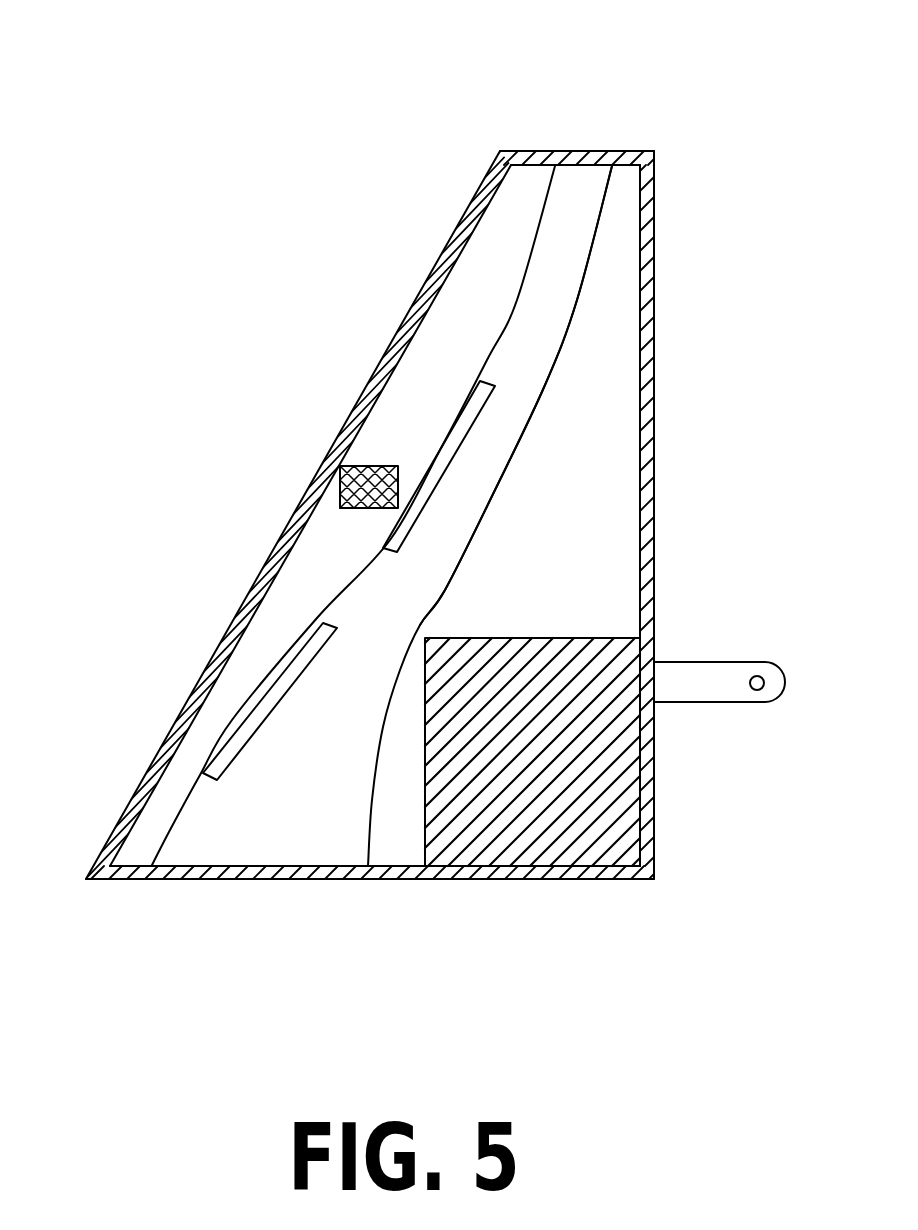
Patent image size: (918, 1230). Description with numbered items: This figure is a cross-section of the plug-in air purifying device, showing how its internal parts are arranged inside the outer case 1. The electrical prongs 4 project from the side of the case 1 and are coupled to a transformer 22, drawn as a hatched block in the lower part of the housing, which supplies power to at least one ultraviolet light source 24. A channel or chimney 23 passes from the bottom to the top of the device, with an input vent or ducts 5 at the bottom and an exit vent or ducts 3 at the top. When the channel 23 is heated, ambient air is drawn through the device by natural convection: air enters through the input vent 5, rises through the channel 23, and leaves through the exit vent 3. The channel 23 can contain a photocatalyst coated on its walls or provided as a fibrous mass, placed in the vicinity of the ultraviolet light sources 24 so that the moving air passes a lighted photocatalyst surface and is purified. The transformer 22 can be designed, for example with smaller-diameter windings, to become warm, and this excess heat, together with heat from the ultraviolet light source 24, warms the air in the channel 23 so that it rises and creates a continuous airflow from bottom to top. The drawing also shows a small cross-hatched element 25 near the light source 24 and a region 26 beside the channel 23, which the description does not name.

The outer case 1 is at (667, 322).
The exit vent 3 is at (587, 148).
The electrical prongs 4 is at (710, 657).
The input vent 5 is at (212, 898).
The transformer 22 is at (540, 843).
The channel 23 is at (292, 822).
The ultraviolet light source 24 is at (473, 403).
The cross-hatched element 25 is at (345, 468).
The chamber 26 is at (595, 485).